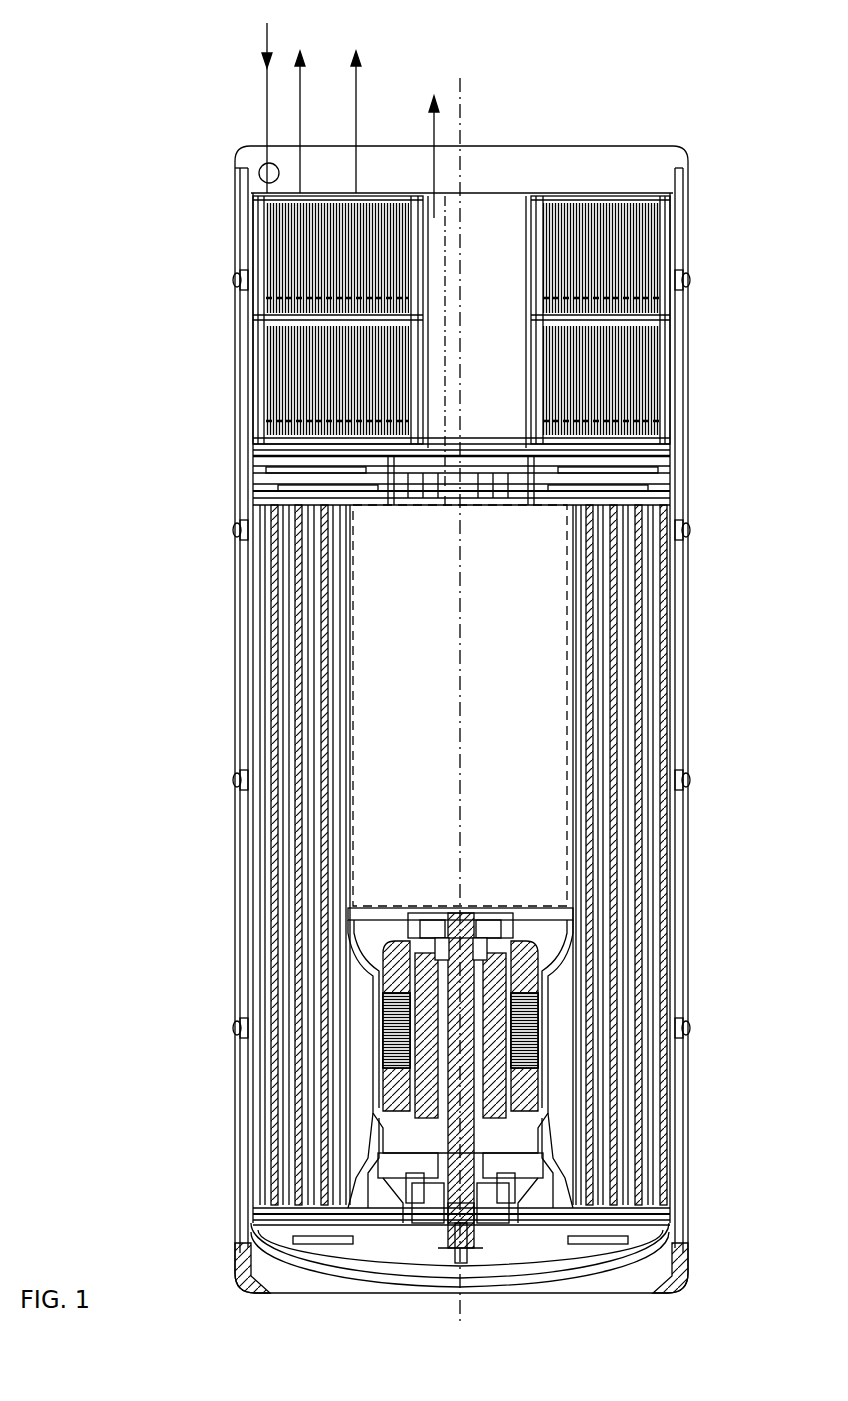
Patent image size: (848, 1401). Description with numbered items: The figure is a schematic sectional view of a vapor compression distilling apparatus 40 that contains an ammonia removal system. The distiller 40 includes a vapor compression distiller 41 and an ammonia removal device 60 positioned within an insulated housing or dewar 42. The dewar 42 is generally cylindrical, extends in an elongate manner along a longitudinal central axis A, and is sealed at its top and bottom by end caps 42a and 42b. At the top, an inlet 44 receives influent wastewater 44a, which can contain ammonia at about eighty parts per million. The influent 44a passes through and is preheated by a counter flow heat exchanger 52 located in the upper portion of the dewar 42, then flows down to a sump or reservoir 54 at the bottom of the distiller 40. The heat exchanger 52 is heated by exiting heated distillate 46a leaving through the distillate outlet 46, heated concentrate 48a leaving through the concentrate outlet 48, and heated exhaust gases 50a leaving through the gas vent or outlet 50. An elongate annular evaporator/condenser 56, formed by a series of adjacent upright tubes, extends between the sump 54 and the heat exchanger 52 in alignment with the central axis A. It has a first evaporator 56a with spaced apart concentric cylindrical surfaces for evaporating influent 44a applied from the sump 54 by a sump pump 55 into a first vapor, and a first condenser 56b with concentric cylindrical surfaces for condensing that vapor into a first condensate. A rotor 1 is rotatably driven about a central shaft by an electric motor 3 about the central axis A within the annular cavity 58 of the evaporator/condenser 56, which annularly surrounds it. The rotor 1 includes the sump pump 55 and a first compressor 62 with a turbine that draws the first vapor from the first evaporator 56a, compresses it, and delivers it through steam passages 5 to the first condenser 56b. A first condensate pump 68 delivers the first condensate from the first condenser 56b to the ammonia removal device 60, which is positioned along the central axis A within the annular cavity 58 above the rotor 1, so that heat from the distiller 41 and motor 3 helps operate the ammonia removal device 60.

The distiller 40 is at (140, 677).
The vapor compression distiller 41 is at (227, 688).
The insulated housing or dewar 42 is at (227, 605).
The end cap 42a is at (646, 138).
The end cap 42b is at (682, 1255).
The inlet 44 is at (259, 126).
The influent 44a is at (258, 17).
The distillate outlet 46 is at (352, 126).
The distillate 46a is at (348, 92).
The concentrate outlet 48 is at (296, 126).
The concentrate 48a is at (292, 68).
The gas vent or outlet 50 is at (426, 165).
The exhaust gases 50a is at (422, 115).
The counter flow heat exchanger 52 is at (648, 240).
The sump or reservoir 54 is at (618, 1240).
The sump pump 55 is at (485, 1232).
The evaporator/condenser 56 is at (622, 655).
The first evaporator 56a is at (658, 615).
The first condenser 56b is at (265, 880).
The annular cavity 58 is at (525, 690).
The ammonia removal device 60 is at (565, 735).
The first compressor 62 is at (360, 1115).
The first condensate pump 68 is at (407, 905).
The rotor 1 is at (357, 932).
The motor 3 is at (375, 1015).
The steam passages 5 is at (350, 942).
The longitudinal central axis A is at (454, 99).